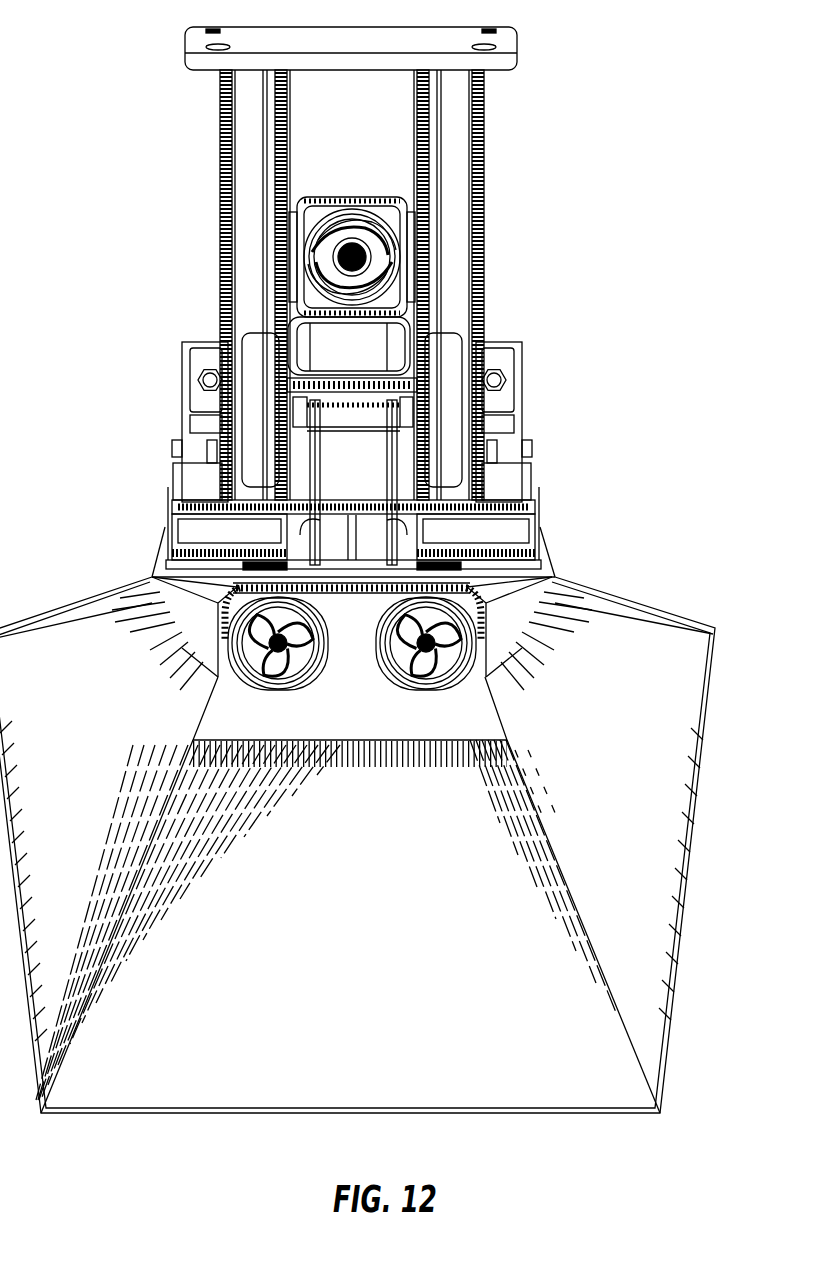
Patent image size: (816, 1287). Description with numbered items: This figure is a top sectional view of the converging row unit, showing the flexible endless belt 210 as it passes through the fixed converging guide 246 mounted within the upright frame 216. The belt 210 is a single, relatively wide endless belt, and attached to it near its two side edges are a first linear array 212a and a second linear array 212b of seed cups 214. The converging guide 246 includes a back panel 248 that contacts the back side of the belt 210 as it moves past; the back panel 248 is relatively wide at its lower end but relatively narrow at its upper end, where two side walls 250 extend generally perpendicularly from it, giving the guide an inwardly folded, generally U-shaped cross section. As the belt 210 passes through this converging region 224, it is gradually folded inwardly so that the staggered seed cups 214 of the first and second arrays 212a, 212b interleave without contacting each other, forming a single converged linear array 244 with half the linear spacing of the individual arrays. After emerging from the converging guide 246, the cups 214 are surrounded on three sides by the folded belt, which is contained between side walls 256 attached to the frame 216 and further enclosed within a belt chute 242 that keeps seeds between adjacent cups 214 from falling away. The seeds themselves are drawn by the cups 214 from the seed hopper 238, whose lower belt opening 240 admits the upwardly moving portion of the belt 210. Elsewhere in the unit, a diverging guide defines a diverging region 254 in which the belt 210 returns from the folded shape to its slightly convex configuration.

The converging region 224 is at (308, 183).
The belt chute 242 is at (371, 197).
The converged linear array 244 is at (307, 248).
The diverging region 254 is at (312, 267).
The side walls 256 is at (390, 257).
The upright frame 216 is at (447, 362).
The back panel 248 is at (470, 575).
The converging guide 246 is at (135, 571).
The side walls 250 is at (190, 632).
The flexible endless belt 210 is at (365, 597).
The first linear array 212a is at (230, 696).
The second linear array 212b is at (472, 696).
The seed cups 214 is at (297, 683).
The belt opening 240 is at (353, 763).
The seed hopper 238 is at (658, 1020).